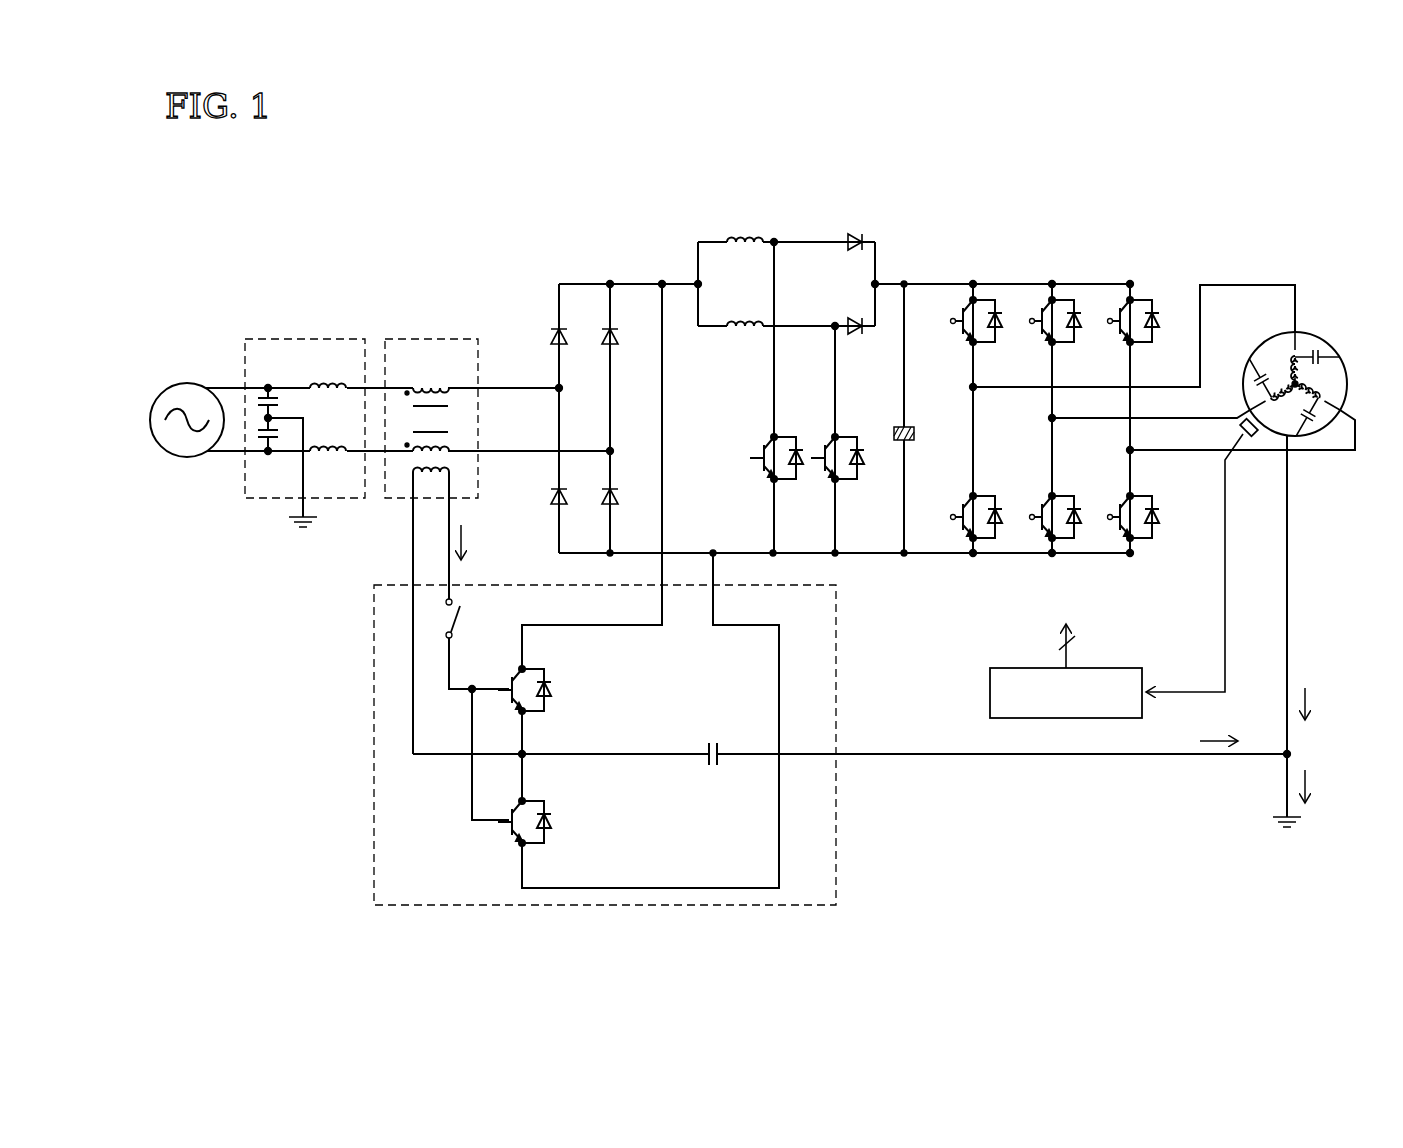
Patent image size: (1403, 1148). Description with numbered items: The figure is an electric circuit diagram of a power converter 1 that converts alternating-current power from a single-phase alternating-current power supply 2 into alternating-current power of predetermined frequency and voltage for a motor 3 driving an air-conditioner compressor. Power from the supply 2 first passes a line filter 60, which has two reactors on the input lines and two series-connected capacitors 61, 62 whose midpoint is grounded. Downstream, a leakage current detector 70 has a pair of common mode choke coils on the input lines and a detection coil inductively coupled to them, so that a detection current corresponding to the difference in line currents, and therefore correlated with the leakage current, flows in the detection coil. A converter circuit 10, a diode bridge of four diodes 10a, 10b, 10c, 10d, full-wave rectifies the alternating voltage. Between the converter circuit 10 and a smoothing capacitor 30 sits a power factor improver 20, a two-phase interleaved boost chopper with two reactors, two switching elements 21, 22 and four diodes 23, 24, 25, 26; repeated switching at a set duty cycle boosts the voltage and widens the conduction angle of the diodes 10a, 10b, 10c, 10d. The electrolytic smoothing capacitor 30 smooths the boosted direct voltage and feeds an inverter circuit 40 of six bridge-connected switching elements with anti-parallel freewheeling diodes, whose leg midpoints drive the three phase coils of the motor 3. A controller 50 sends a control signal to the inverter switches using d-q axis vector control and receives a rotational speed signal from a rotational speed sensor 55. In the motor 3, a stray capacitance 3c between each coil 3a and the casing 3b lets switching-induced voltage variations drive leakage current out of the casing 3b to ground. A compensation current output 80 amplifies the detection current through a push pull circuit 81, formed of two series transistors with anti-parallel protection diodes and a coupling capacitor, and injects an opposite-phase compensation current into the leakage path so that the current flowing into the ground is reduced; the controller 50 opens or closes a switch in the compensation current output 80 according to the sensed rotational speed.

The power converter 1 is at (928, 166).
The single-phase alternating-current power supply 2 is at (169, 382).
The motor 3 is at (1306, 332).
The coil 3a is at (1289, 352).
The casing 3b is at (1340, 360).
The stray capacitance 3c is at (1256, 378).
The converter circuit 10 is at (578, 272).
The diode 10a is at (565, 334).
The diode 10b is at (615, 334).
The diode 10c is at (565, 495).
The diode 10d is at (615, 495).
The power factor improver 20 is at (808, 218).
The switching element 21 is at (750, 458).
The switching element 22 is at (812, 458).
The diode 23 is at (798, 479).
The diode 24 is at (858, 479).
The diode 25 is at (853, 236).
The diode 26 is at (851, 320).
The smoothing capacitor 30 is at (902, 428).
The inverter circuit 40 is at (1047, 244).
The controller 50 is at (988, 693).
The rotational speed sensor 55 is at (1253, 440).
The line filter 60 is at (299, 338).
The capacitor 61 is at (272, 386).
The capacitor 62 is at (272, 455).
The leakage current detector 70 is at (419, 338).
The compensation current output 80 is at (372, 646).
The push pull circuit 81 is at (462, 846).